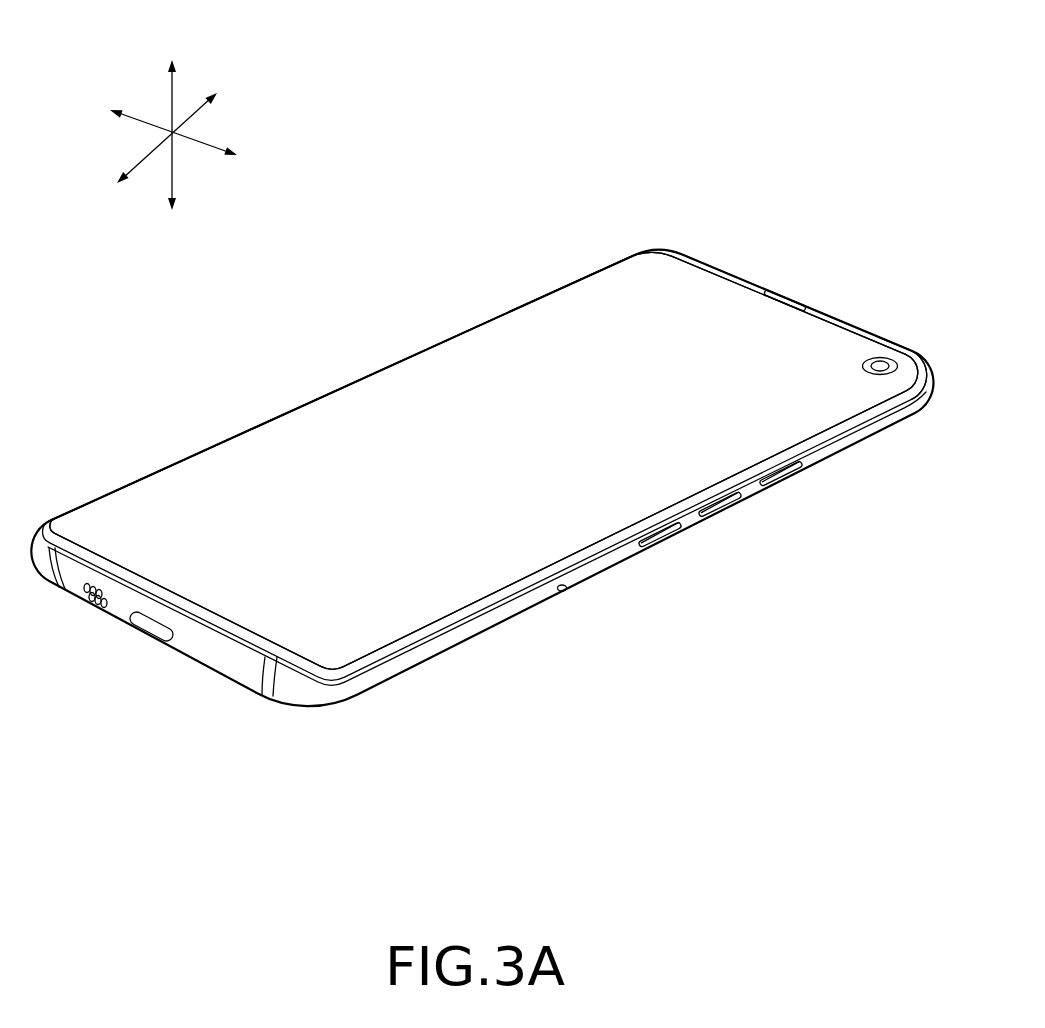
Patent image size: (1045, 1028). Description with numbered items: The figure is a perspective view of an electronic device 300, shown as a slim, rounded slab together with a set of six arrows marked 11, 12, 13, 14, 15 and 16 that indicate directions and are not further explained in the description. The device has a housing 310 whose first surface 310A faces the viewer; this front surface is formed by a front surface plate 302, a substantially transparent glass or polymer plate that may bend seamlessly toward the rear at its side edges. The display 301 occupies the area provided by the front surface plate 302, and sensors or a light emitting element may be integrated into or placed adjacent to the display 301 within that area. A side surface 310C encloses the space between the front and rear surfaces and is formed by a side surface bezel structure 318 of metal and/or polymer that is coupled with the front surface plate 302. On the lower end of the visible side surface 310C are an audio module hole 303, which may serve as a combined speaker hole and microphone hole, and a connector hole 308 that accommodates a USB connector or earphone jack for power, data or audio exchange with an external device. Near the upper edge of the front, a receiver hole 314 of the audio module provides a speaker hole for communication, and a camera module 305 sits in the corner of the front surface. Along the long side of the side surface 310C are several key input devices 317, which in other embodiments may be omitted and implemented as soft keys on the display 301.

The first direction (+Z) 11 is at (172, 60).
The second direction (-Z) 12 is at (173, 210).
The third direction 13 is at (113, 112).
The fourth direction 14 is at (236, 150).
The fifth direction 15 is at (213, 90).
The sixth direction 16 is at (118, 184).
The electronic device 300 is at (345, 312).
The display 301 is at (287, 488).
The front surface plate 302 is at (908, 353).
The audio module hole 303 is at (95, 608).
The camera module 305 is at (872, 358).
The connector hole 308 is at (150, 628).
The housing 310 is at (458, 333).
The first surface 310A is at (598, 341).
The side surface 310C is at (566, 591).
The receiver hole 314 is at (782, 300).
The key input device 317 is at (800, 477).
The side surface bezel structure 318 is at (598, 567).